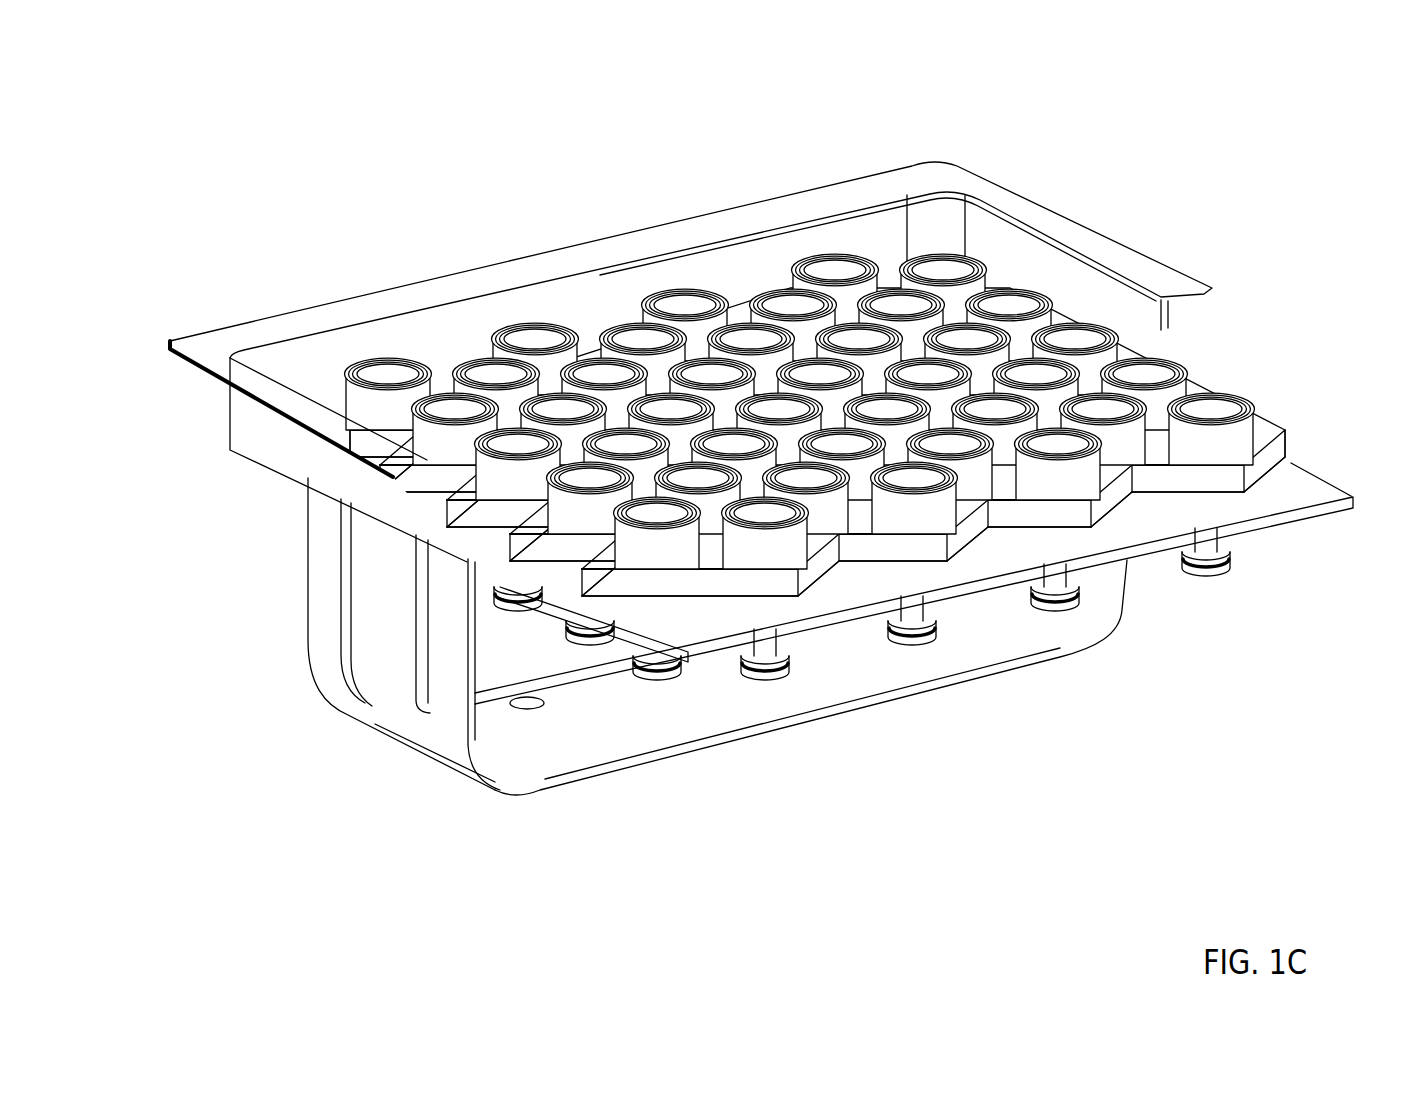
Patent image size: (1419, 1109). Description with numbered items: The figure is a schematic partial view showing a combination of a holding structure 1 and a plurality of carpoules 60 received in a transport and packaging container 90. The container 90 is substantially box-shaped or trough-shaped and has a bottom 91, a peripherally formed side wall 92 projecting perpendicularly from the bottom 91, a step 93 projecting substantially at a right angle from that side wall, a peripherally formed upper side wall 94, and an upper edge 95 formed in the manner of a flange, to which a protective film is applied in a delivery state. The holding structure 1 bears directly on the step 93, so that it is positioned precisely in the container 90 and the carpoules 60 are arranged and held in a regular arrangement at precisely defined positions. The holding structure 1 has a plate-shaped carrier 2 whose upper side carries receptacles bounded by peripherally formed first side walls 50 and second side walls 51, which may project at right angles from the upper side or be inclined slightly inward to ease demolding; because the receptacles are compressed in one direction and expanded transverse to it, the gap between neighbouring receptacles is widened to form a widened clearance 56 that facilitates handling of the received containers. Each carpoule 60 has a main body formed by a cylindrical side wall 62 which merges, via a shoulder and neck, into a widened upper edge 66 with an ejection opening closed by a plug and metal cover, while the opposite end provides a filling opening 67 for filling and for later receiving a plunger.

The transport and packaging container 90 is at (672, 305).
The upper edge 95 is at (203, 353).
The upper side wall 94 is at (253, 437).
The step 93 is at (281, 476).
The side wall 92 is at (380, 650).
The bottom 91 is at (610, 737).
The holding structure 1 is at (1030, 572).
The plate-shaped carrier 2 is at (858, 472).
The first side wall 50 is at (1262, 460).
The second side wall 51 is at (1252, 533).
The widened clearance for handling 56 is at (1155, 466).
The carpoule 60 is at (1255, 381).
The cylindrical side wall 62 is at (1229, 438).
The upper edge 66 is at (1221, 577).
The filling opening 67 is at (1219, 405).